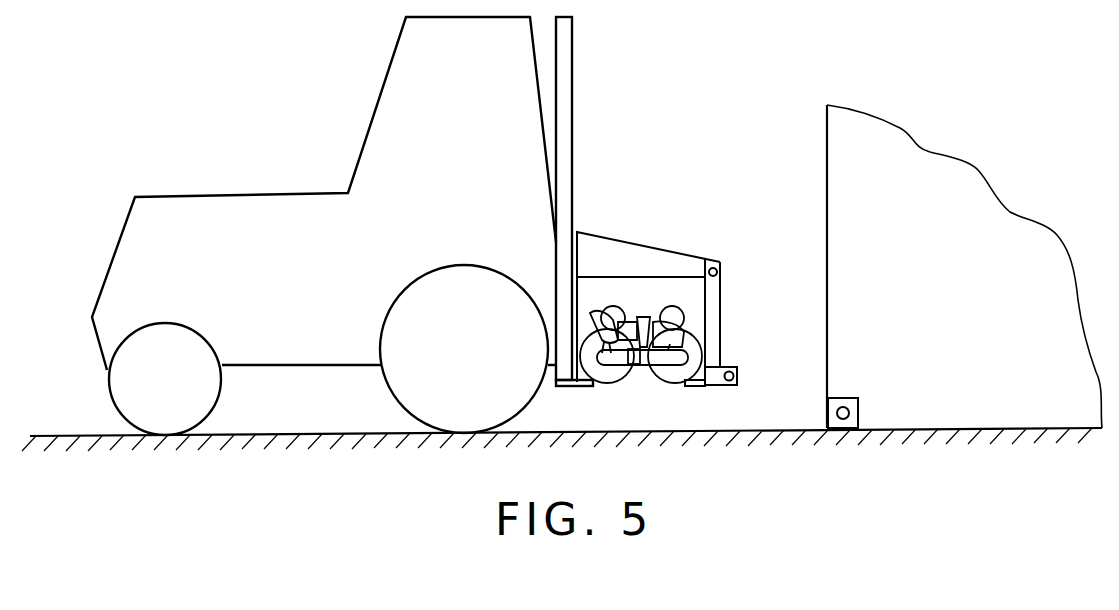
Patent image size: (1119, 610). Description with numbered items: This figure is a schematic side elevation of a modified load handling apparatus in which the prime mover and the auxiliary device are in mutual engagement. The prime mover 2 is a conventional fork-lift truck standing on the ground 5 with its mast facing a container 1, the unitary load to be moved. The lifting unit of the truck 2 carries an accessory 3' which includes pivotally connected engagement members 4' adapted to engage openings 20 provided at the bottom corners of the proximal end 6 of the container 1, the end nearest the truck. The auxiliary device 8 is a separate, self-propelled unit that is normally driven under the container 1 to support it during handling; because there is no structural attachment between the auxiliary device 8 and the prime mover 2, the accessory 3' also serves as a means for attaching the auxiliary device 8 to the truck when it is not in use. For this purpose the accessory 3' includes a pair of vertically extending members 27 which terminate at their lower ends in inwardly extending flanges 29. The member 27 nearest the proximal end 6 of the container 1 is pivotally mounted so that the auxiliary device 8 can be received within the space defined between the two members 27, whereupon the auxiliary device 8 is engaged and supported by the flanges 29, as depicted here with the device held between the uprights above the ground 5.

The container 1 is at (968, 177).
The prime mover 2 is at (372, 124).
The accessory 3' is at (648, 281).
The engagement members 4' is at (736, 322).
The ground surface 5 is at (67, 436).
The proximal end 6 is at (827, 205).
The auxiliary device 8 is at (636, 385).
The openings 20 is at (858, 408).
The vertically extending members 27 is at (578, 306).
The flanges 29 is at (588, 386).